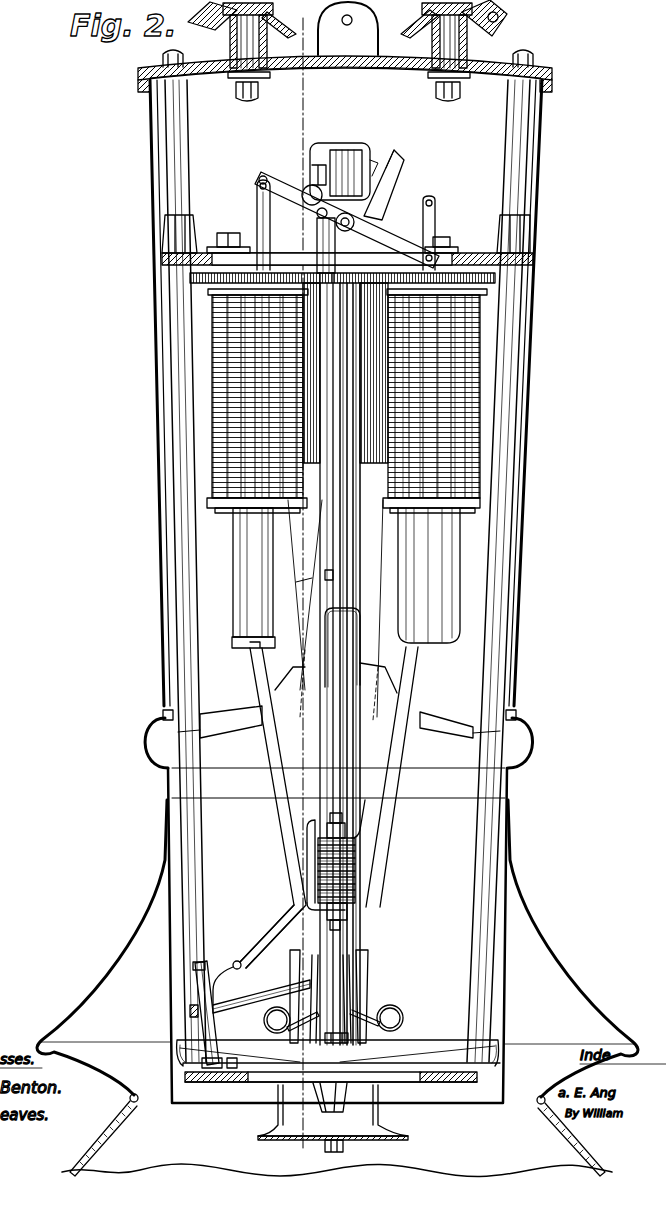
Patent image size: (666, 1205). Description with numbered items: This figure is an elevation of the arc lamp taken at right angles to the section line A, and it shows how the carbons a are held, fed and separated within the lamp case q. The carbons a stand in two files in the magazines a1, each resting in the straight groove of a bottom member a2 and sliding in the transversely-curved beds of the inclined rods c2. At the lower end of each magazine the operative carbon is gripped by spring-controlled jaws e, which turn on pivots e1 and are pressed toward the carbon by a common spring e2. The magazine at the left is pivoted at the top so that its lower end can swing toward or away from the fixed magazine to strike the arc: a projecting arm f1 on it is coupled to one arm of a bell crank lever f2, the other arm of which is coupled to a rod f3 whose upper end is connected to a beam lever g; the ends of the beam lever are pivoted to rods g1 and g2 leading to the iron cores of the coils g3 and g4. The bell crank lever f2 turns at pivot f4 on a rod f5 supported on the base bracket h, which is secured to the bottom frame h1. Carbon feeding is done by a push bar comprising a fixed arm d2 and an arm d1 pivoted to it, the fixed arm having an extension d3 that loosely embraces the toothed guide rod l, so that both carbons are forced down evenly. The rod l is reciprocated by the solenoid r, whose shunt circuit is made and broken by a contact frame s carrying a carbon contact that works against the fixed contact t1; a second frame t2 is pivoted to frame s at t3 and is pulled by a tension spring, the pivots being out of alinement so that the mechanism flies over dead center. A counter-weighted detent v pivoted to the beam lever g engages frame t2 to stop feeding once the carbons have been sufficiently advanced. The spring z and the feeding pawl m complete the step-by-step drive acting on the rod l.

The section line A is at (298, 584).
The casing / vessel q is at (140, 80).
The fixed contact t1 is at (347, 50).
The second frame t2 is at (352, 144).
The pivot t3 is at (347, 571).
The contact frame s is at (376, 161).
The counter-weighted detent v is at (400, 162).
The beam lever g is at (400, 248).
The core rod g1 is at (257, 216).
The core rod g2 is at (436, 218).
The solenoid r is at (388, 488).
The reciprocatory rod l is at (330, 532).
The rod f3 is at (308, 580).
The coil g3 is at (230, 510).
The coil g4 is at (387, 508).
The extension d3 is at (361, 618).
The braces m is at (350, 660).
The fixed arm d2 is at (236, 716).
The pivoted arm d1 is at (447, 720).
The magazine a1 is at (262, 740).
The inclined rod c2 is at (280, 838).
The spring z is at (345, 890).
The bell crank lever f2 is at (255, 928).
The projecting arm f1 is at (240, 988).
The pivot f4 is at (200, 968).
The rod f5 is at (203, 1020).
The bottom member a2 is at (290, 970).
The jaw pivot e1 is at (372, 1000).
The jaw spring e2 is at (337, 1020).
The gripping jaw e is at (326, 1040).
The base bracket h is at (338, 1055).
The bottom frame h1 is at (225, 1085).
The carbon a is at (328, 1112).